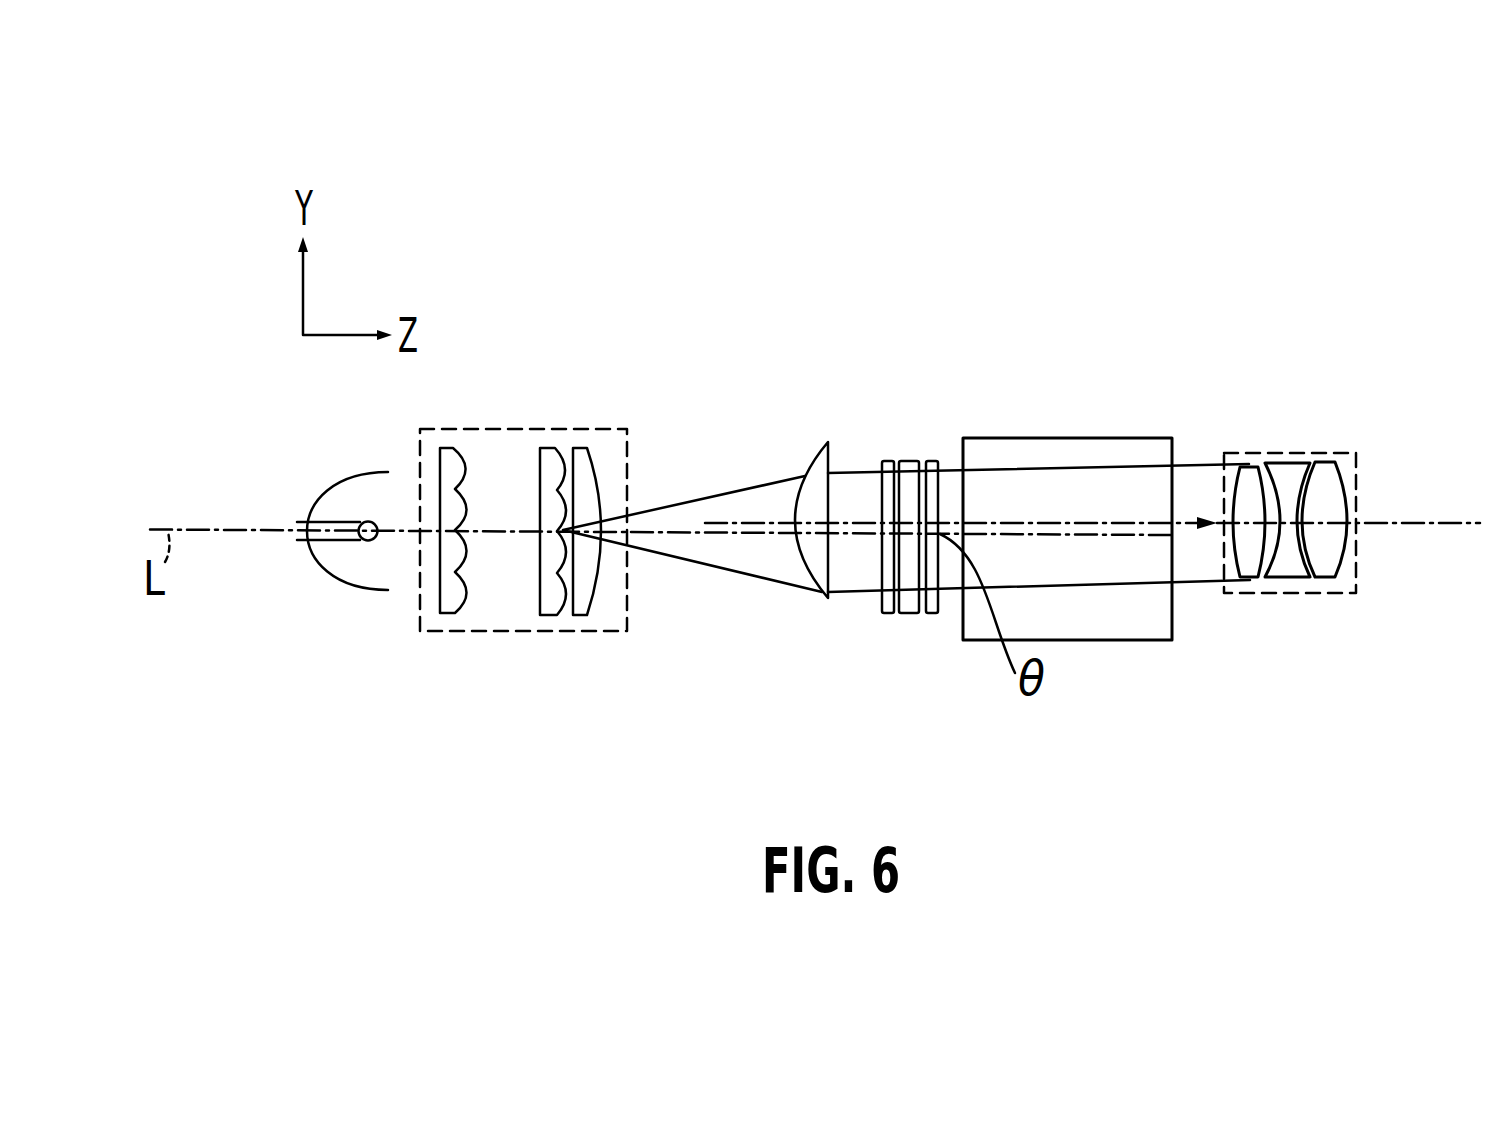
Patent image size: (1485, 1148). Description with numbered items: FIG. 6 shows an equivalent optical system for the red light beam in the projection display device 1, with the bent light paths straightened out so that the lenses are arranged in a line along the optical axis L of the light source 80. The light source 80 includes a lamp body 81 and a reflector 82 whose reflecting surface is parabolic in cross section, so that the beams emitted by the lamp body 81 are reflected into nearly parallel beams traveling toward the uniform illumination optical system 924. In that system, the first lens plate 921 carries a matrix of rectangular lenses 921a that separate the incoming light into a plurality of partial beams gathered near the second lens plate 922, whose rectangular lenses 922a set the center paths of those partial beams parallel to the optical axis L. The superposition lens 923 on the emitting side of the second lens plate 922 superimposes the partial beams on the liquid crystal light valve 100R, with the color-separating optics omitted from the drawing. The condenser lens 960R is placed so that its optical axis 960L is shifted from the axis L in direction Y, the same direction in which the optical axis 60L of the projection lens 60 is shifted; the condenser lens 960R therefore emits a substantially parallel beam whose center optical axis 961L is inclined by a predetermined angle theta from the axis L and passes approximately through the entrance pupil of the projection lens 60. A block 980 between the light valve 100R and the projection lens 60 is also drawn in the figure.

The projection display device 1 is at (1025, 246).
The light source 80 is at (325, 532).
The lamp body 81 is at (328, 541).
The reflector 82 is at (360, 587).
The uniform illumination optical system 924 is at (418, 632).
The first lens plate 921 is at (476, 479).
The rectangular lens 921a is at (452, 470).
The second lens plate 922 is at (597, 532).
The rectangular lens 922a is at (560, 460).
The superposition lens 923 is at (597, 587).
The condenser lens 960R is at (818, 450).
The optical axis of condenser lens 960L is at (772, 522).
The center optical axis 961L is at (1005, 527).
The liquid crystal light valve 100R is at (938, 621).
The cross dichroic prism 980 is at (1123, 623).
The projection lens 60 is at (1280, 447).
The optical axis of projection lens 60L is at (1397, 522).